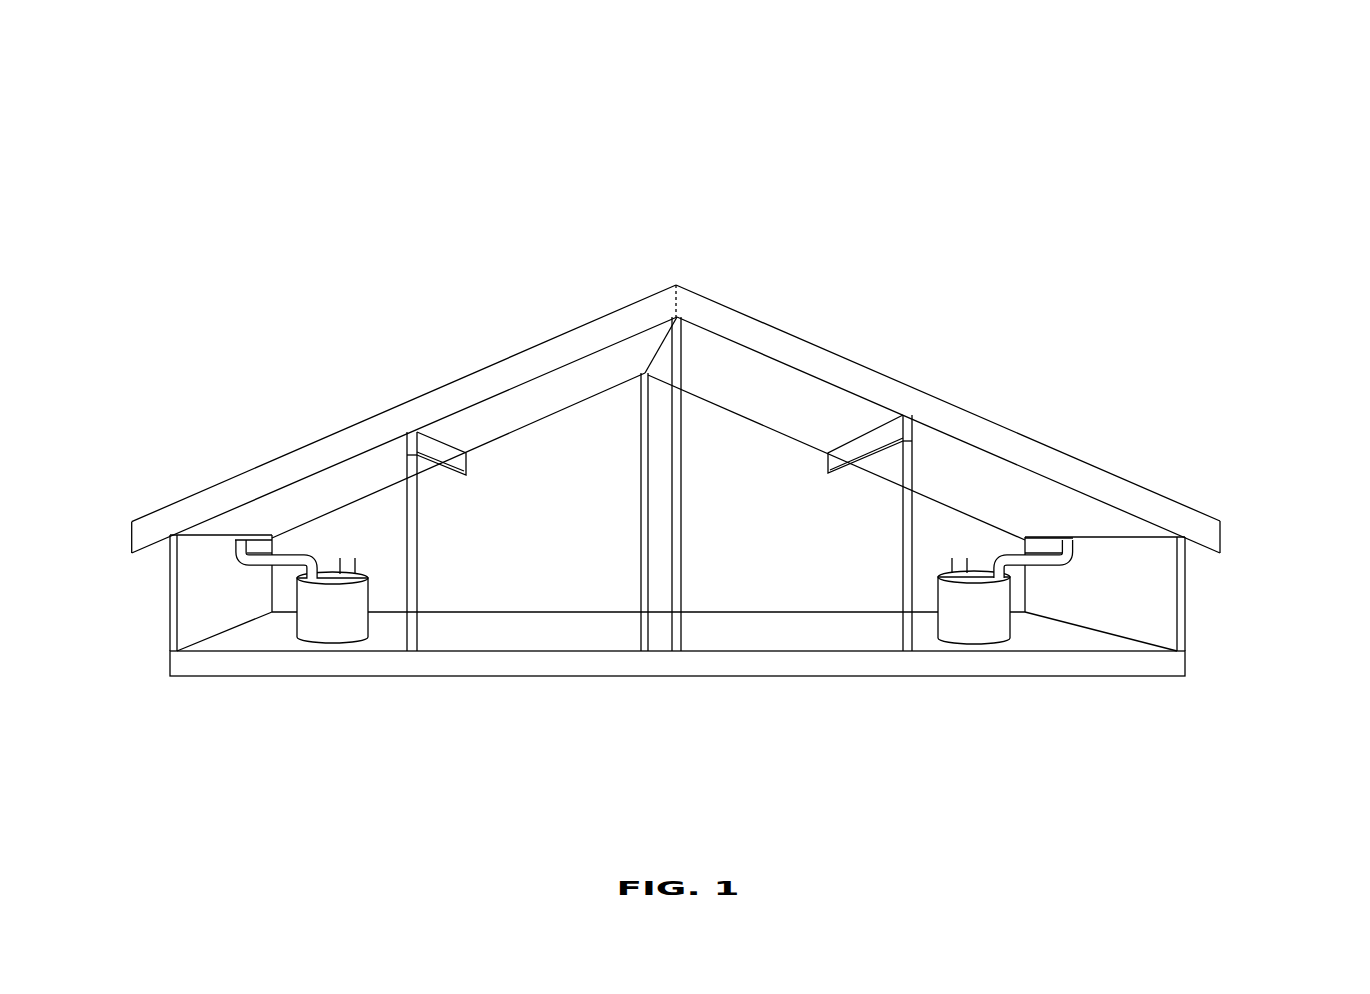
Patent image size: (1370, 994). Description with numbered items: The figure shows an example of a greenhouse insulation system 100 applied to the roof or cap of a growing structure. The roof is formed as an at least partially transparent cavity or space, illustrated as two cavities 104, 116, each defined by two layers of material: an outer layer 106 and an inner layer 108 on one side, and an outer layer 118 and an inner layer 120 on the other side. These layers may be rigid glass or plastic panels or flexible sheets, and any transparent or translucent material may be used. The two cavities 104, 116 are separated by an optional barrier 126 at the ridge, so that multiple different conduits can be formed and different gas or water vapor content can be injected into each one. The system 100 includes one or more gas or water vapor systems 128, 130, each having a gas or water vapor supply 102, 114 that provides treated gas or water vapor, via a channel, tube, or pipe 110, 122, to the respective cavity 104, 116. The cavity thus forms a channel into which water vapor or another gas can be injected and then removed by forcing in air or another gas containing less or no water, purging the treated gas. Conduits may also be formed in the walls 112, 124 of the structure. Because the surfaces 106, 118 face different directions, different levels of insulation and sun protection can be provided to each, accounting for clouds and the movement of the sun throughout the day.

The greenhouse insulation system 100 is at (718, 401).
The gas or water vapor supply 102 is at (978, 640).
The cavity 104 is at (948, 419).
The layer 106 is at (1067, 449).
The layer 108 is at (1017, 466).
The channel, tube, or pipe 110 is at (1077, 566).
The wall 112 is at (1191, 593).
The gas or water vapor supply 114 is at (313, 640).
The cavity 116 is at (404, 419).
The layer 118 is at (370, 417).
The layer 120 is at (345, 462).
The channel, tube, or pipe 122 is at (255, 569).
The wall 124 is at (166, 606).
The barrier 126 is at (682, 299).
The gas or water vapor system 128 is at (1049, 647).
The gas or water vapor system 130 is at (384, 633).